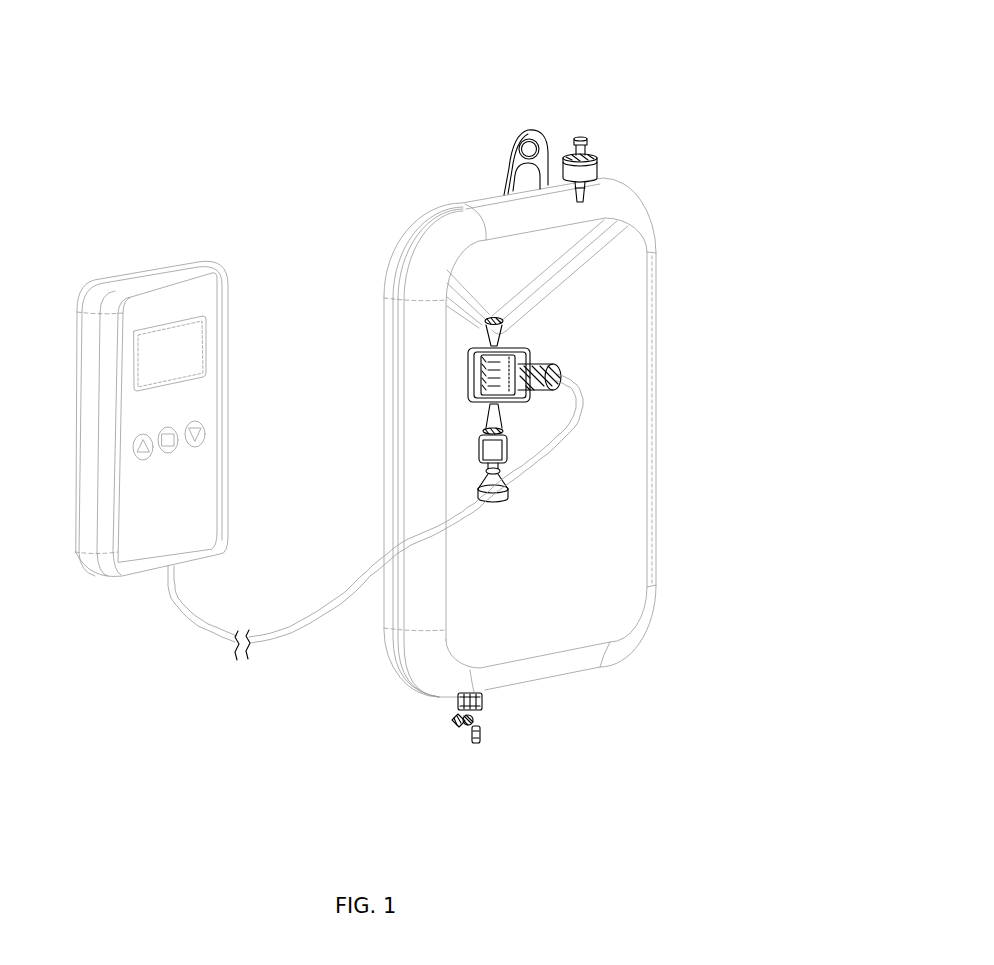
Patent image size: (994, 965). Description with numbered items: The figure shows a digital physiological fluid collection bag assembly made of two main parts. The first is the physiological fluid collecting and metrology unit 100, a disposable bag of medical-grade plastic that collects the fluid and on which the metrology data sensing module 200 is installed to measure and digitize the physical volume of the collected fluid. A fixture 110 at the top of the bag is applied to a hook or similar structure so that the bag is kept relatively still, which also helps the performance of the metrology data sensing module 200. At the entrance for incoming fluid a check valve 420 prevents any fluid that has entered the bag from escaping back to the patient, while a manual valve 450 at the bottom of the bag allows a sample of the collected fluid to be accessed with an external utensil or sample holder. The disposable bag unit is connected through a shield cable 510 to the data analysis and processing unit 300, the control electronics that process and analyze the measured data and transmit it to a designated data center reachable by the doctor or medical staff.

The physiological fluid collecting and metrology unit 100 is at (634, 632).
The fixture 110 is at (522, 150).
The check valve 420 is at (583, 160).
The metrology data sensing module 200 is at (527, 354).
The shield cable 510 is at (292, 641).
The manual valve 450 is at (468, 740).
The data analysis and processing unit 300 is at (155, 302).